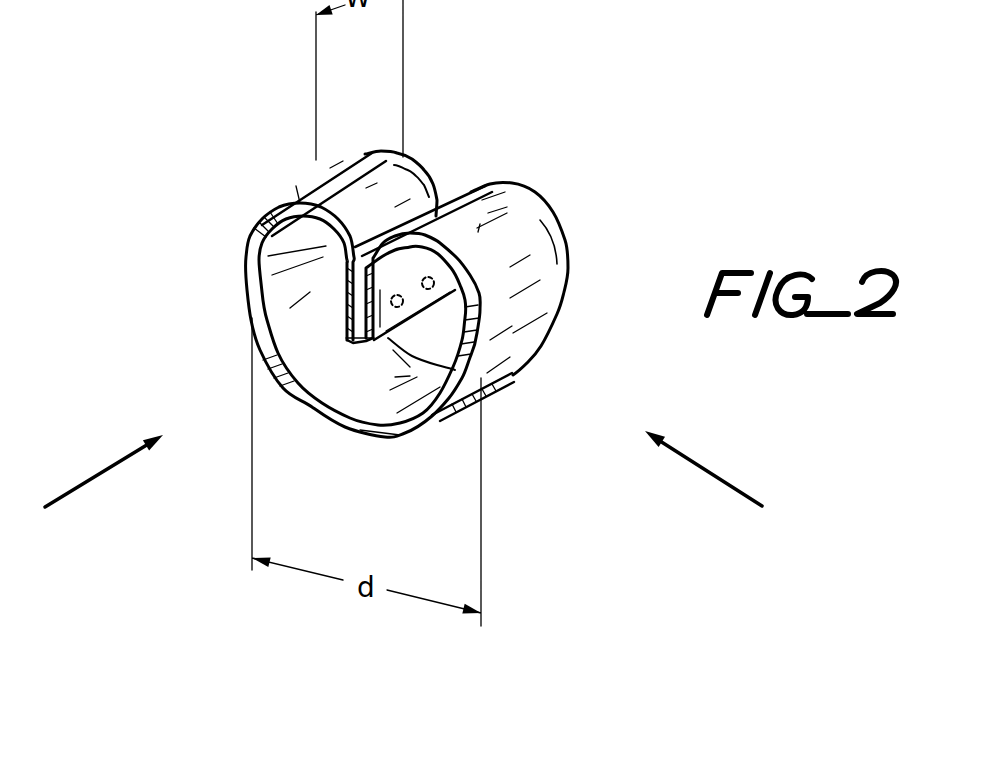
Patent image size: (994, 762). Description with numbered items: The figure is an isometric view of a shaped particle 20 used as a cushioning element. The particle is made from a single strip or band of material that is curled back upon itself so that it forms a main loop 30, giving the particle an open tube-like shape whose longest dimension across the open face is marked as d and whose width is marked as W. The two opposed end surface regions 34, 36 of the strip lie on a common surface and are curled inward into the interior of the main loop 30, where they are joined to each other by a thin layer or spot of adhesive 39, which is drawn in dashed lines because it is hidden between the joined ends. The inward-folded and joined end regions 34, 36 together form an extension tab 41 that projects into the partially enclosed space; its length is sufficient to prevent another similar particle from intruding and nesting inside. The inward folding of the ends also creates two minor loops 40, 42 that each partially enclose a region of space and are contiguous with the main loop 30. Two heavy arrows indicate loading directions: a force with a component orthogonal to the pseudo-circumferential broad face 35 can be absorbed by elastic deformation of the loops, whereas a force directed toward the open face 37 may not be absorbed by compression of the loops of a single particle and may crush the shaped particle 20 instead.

The shaped particle 20 is at (521, 492).
The main loop 30 is at (373, 398).
The end surface region 34 is at (347, 295).
The pseudo-circumferential broad face 35 is at (717, 480).
The end surface region 36 is at (376, 341).
The open face 37 is at (103, 476).
The adhesive 39 is at (457, 264).
The minor loop 40 is at (480, 224).
The extension tab 41 is at (353, 342).
The minor loop 42 is at (296, 186).